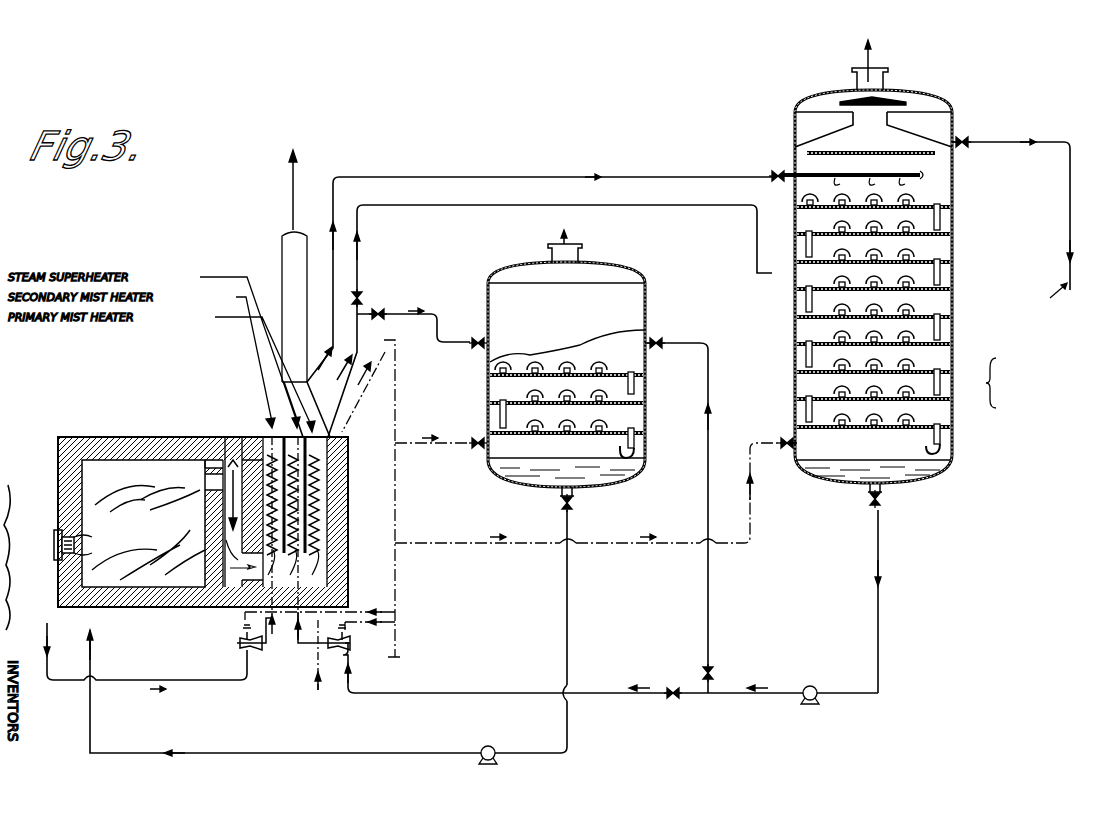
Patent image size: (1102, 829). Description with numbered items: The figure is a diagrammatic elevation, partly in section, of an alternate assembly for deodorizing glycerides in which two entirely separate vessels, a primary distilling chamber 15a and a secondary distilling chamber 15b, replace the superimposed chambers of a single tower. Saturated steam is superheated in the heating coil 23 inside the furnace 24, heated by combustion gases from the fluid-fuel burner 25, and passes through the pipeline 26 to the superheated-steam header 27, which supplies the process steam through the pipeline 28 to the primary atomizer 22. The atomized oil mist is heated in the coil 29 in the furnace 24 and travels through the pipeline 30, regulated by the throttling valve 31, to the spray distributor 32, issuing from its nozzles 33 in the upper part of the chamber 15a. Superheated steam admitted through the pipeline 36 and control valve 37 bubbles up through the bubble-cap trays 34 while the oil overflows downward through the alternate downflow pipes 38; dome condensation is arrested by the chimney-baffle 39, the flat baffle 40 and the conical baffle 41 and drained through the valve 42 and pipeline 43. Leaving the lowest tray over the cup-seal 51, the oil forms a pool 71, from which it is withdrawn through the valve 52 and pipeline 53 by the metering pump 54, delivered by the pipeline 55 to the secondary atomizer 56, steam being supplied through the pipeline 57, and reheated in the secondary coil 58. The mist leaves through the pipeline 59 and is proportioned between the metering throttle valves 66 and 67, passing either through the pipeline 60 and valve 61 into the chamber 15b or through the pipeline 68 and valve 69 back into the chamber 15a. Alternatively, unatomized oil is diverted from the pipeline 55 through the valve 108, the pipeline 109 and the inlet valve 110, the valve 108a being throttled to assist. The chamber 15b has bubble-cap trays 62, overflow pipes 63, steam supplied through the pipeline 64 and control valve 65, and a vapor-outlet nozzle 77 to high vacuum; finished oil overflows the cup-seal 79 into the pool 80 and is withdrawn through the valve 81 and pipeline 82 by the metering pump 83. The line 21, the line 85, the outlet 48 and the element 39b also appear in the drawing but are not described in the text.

The primary distilling chamber 15a is at (806, 102).
The secondary distilling chamber 15b is at (646, 310).
The oil supply line 21 is at (48, 646).
The primary atomizer 22 is at (242, 650).
The heating coil 23 is at (318, 540).
The furnace 24 is at (198, 437).
The fluid-fuel burner 25 is at (54, 541).
The pipeline 26 is at (352, 402).
The superheated-steam header 27 is at (396, 380).
The pipeline 28 is at (368, 609).
The primary mist-heating coil 29 is at (266, 440).
The pipeline 30 is at (333, 298).
The throttling valve 31 is at (780, 168).
The spray distributor 32 is at (925, 182).
The nozzles 33 is at (890, 185).
The bubble-cap trays 34 is at (810, 210).
The pipeline 36 is at (464, 543).
The control valve 37 is at (784, 436).
The downflow pipes 38 is at (942, 220).
The arresting chimney-baffle 39 is at (539, 268).
The funnel baffle 39b is at (925, 132).
The flat baffle 40 is at (890, 155).
The conical baffle 41 is at (906, 102).
The valve 42 is at (968, 134).
The pipeline 43 is at (1062, 142).
The vacuum outlet 48 is at (890, 78).
The cup-seal 51 is at (945, 442).
The valve 52 is at (885, 496).
The pipeline 53 is at (880, 606).
The metering pump 54 is at (815, 685).
The pipeline 55 is at (398, 694).
The secondary atomizer 56 is at (350, 648).
The pipeline 57 is at (348, 632).
The secondary mist-heating coil 58 is at (300, 528).
The pipeline 59 is at (384, 340).
The pipeline 60 is at (441, 314).
The valve 61 is at (476, 334).
The bubble-cap trays 62 is at (646, 386).
The overflow pipes 63 is at (500, 405).
The pipeline 64 is at (430, 446).
The control valve 65 is at (475, 434).
The metering throttle valve 66 is at (383, 308).
The metering throttle valve 67 is at (362, 292).
The pipeline 68 is at (358, 228).
The valve 69 is at (806, 298).
The pool 71 is at (930, 476).
The nozzle 77 is at (582, 252).
The cup-seal 79 is at (622, 452).
The pool 80 is at (615, 470).
The valve 81 is at (580, 500).
The pipeline 82 is at (568, 604).
The metering pump 83 is at (493, 748).
The return line 85 is at (92, 638).
The valve 108 is at (714, 672).
The valve 108a is at (674, 684).
The pipeline 109 is at (708, 612).
The inlet valve 110 is at (662, 338).